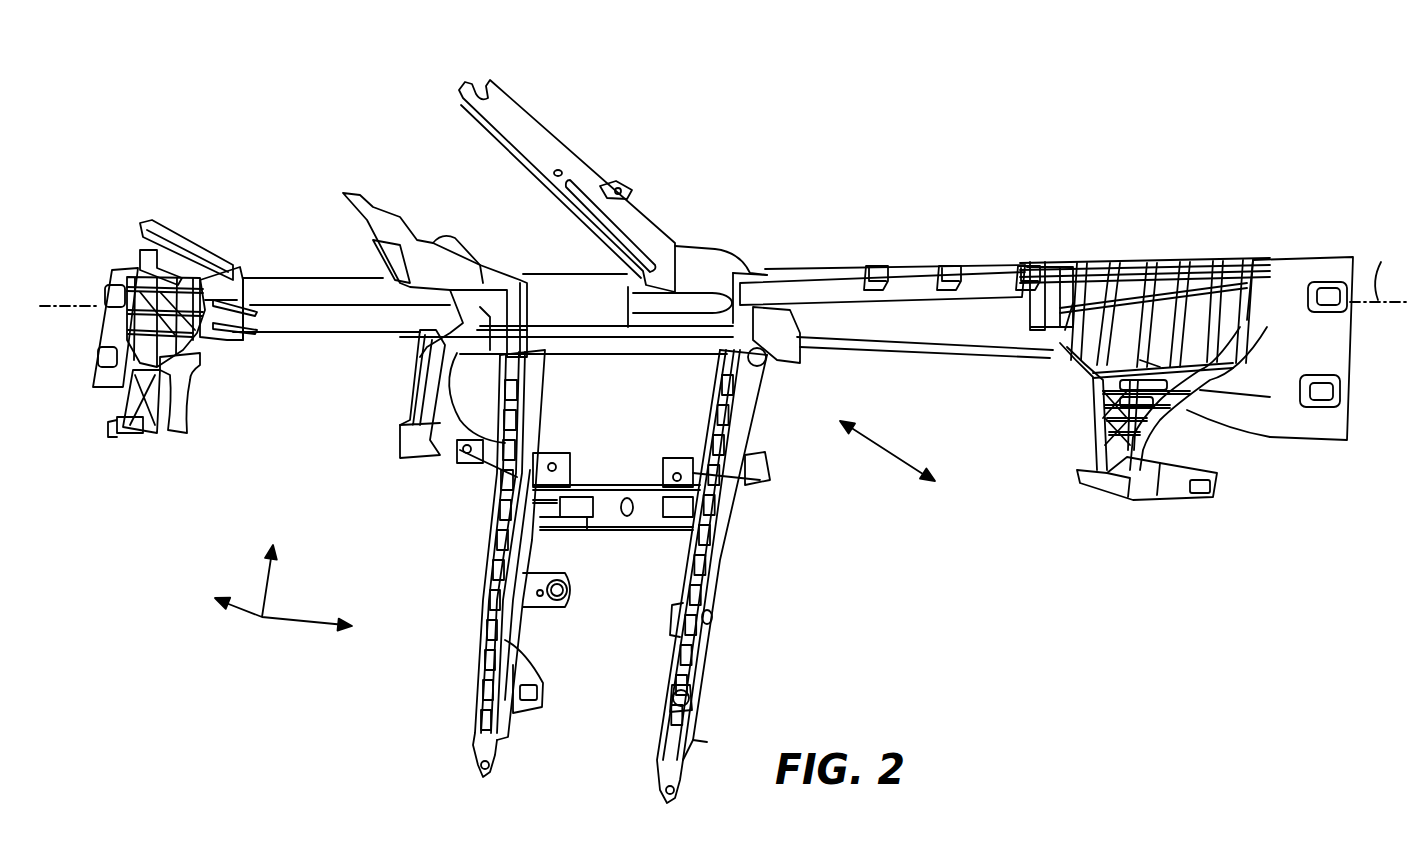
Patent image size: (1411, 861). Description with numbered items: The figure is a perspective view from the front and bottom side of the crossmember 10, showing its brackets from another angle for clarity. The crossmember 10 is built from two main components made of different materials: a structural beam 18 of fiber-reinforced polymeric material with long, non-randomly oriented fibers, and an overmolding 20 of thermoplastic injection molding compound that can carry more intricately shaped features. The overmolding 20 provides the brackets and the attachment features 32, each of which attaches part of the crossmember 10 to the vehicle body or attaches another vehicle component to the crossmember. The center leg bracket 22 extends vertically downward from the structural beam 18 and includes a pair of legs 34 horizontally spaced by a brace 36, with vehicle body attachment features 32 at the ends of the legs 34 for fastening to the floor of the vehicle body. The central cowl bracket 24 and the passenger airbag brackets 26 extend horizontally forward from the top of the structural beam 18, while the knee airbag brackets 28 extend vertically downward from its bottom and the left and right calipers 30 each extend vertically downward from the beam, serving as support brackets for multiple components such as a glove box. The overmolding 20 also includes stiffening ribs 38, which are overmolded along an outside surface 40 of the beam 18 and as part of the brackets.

The crossmember 10 is at (661, 138).
The structural beam 18 is at (810, 282).
The overmolding 20 is at (708, 250).
The center leg bracket 22 is at (710, 527).
The central cowl bracket 24 is at (550, 132).
The passenger airbag brackets 26 is at (357, 205).
The lower/knee airbag brackets 28 is at (403, 427).
The calipers 30 is at (170, 427).
The attachment features 32 is at (1030, 267).
The legs 34 is at (677, 700).
The brace 36 is at (613, 517).
The stiffening ribs 38 is at (1127, 287).
The outside surface 40 is at (1053, 287).